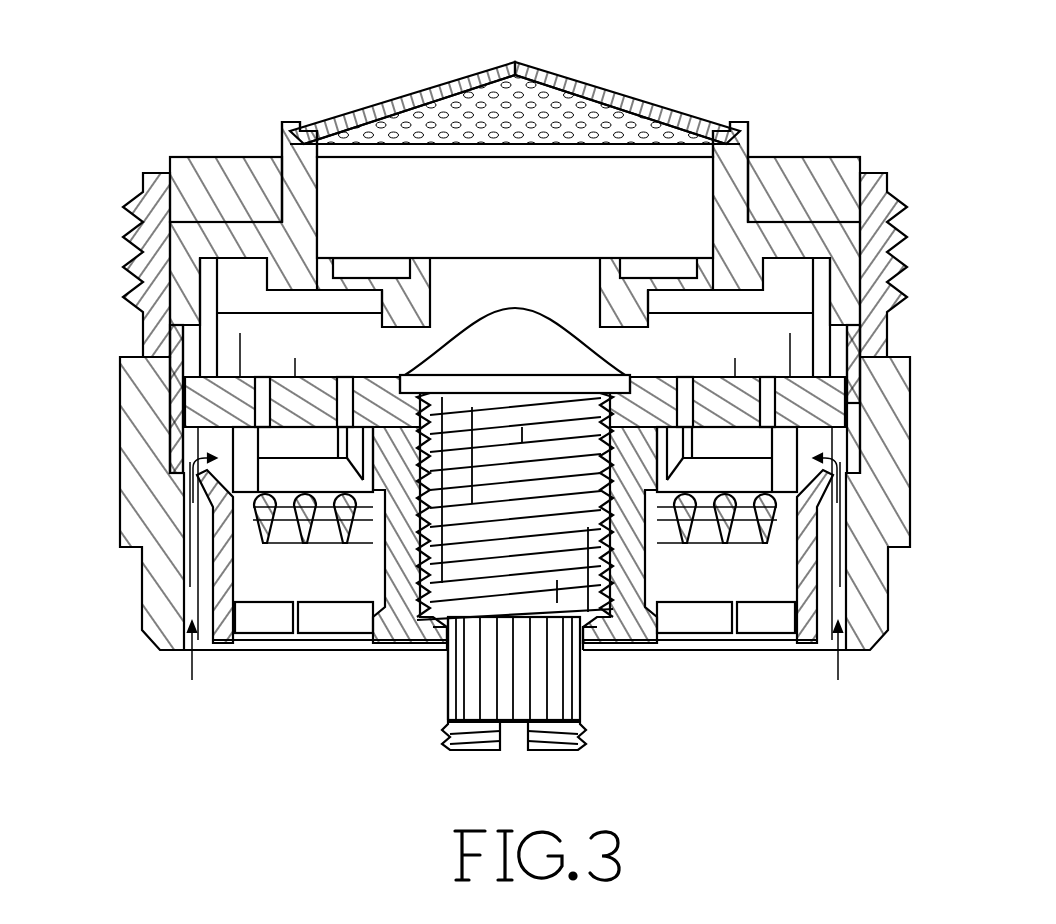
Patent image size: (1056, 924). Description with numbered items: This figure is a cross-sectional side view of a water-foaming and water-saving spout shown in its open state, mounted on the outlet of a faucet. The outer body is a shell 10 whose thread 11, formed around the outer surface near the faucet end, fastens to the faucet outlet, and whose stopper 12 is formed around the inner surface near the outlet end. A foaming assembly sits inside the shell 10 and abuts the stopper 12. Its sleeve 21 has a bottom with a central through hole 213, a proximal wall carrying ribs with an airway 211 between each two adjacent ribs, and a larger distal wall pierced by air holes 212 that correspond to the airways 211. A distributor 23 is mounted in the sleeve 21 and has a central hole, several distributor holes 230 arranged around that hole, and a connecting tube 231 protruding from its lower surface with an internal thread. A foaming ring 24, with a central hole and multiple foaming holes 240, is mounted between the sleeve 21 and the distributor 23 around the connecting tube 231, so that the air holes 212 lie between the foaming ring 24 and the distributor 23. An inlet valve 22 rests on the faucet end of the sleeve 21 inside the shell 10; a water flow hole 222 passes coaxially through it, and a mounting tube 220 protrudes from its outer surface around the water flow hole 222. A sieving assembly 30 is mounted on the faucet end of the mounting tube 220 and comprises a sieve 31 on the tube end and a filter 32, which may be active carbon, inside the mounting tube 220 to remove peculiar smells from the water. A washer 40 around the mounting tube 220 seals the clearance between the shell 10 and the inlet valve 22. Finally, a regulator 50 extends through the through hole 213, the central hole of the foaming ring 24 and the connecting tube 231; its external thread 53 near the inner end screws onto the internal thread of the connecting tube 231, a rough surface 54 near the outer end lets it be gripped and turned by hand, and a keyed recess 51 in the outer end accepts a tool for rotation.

The shell 10 is at (574, 411).
The thread 11 is at (893, 267).
The stopper 12 is at (860, 457).
The sleeve 21 is at (225, 642).
The airway 211 is at (207, 623).
The air hole 212 is at (207, 430).
The through hole 213 is at (443, 637).
The inlet valve 22 is at (180, 248).
The mounting tube 220 is at (293, 155).
The water flow hole 222 is at (598, 275).
The distributor 23 is at (204, 392).
The distributor hole 230 is at (263, 380).
The connecting tube 231 is at (397, 578).
The foaming ring 24 is at (253, 523).
The foaming hole 240 is at (273, 542).
The sieving assembly 30 is at (650, 101).
The sieve 31 is at (505, 63).
The filter 32 is at (667, 160).
The washer 40 is at (847, 167).
The regulator 50 is at (583, 607).
The keyed recess 51 is at (513, 740).
The external thread 53 is at (446, 657).
The rough surface 54 is at (568, 692).